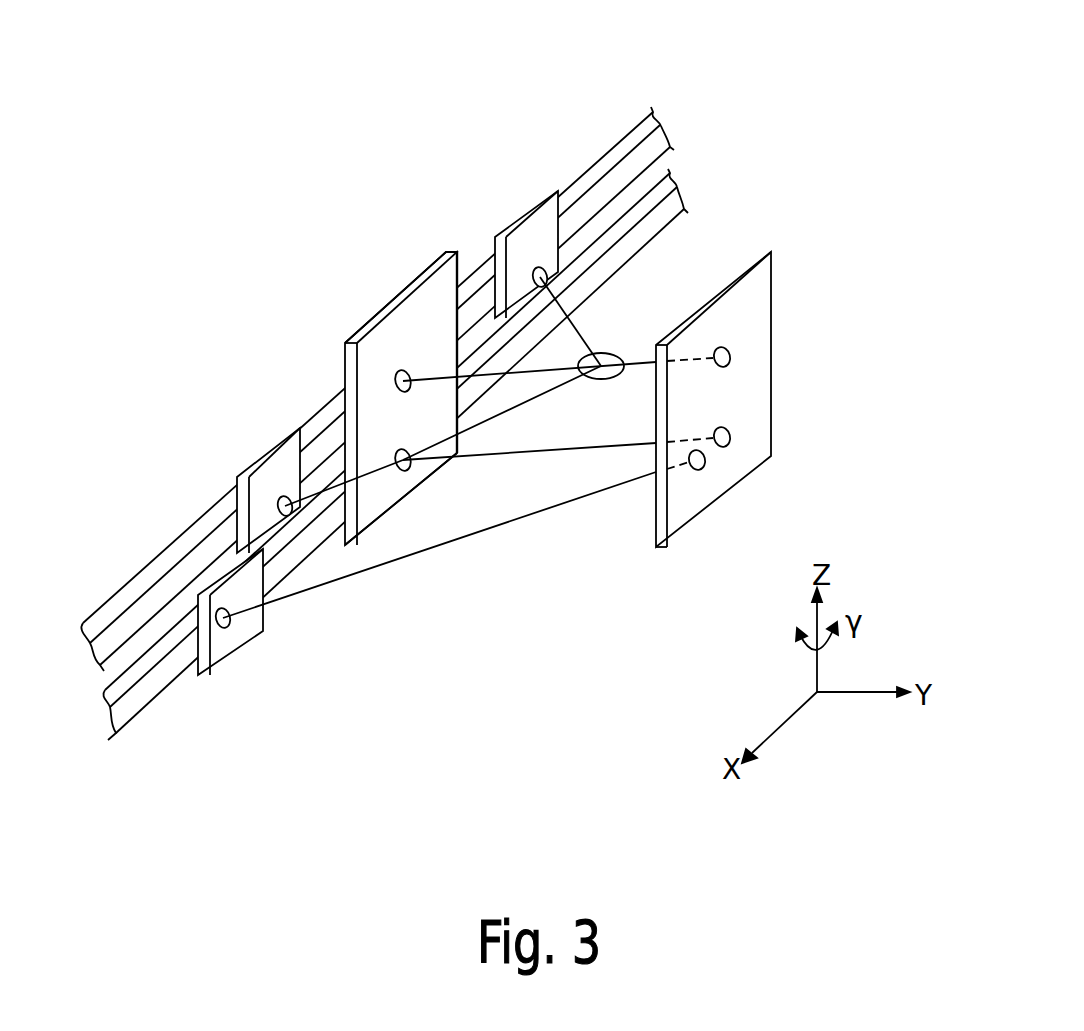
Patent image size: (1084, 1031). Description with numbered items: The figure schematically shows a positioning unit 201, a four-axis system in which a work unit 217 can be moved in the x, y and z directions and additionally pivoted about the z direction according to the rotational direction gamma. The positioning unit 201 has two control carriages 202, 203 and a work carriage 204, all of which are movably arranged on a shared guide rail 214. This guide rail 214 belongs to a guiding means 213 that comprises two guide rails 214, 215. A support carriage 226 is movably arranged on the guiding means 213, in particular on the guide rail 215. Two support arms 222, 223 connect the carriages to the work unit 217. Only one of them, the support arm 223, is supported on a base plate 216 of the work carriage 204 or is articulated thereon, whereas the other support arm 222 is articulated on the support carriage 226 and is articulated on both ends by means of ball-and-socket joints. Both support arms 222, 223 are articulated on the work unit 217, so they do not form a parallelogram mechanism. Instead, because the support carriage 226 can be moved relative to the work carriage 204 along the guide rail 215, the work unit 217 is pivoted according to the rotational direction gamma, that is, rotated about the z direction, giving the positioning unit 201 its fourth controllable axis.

The positioning unit 201 is at (744, 104).
The control carriage 202 is at (540, 230).
The control carriage 203 is at (280, 475).
The work carriage 204 is at (375, 366).
The guiding means 213 is at (127, 657).
The guide rail 214 is at (148, 620).
The guide rail 215 is at (172, 665).
The base plate 216 is at (372, 353).
The work unit 217 is at (748, 302).
The support arm 222 is at (455, 543).
The support arm 223 is at (573, 450).
The support carriage 226 is at (240, 628).